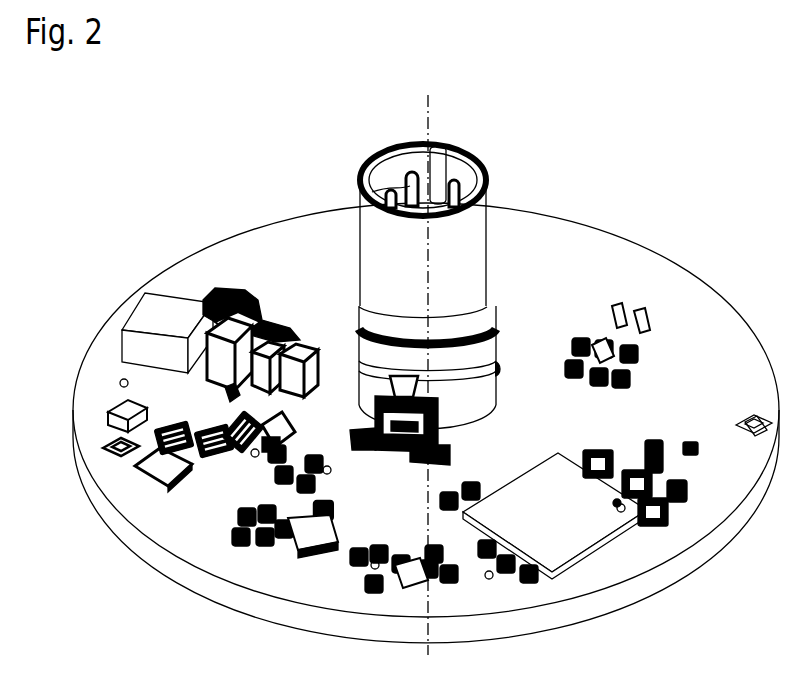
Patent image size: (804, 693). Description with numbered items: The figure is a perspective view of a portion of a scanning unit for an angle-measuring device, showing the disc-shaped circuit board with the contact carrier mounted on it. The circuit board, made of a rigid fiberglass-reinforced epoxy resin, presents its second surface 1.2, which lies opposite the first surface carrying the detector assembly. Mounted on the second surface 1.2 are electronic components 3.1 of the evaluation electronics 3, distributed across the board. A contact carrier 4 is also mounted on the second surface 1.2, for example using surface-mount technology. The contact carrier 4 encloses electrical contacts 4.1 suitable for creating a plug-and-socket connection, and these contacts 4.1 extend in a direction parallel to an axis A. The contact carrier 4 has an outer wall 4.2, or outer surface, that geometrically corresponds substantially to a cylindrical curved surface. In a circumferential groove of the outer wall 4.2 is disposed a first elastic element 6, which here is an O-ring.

The second surface 1.2 is at (604, 235).
The evaluation electronics 3 is at (214, 268).
The electronic components 3.1 is at (160, 303).
The contact carrier 4 is at (427, 304).
The electrical contacts 4.1 is at (360, 180).
The outer wall 4.2 is at (489, 246).
The first elastic element 6 is at (491, 311).
The axis A is at (428, 100).